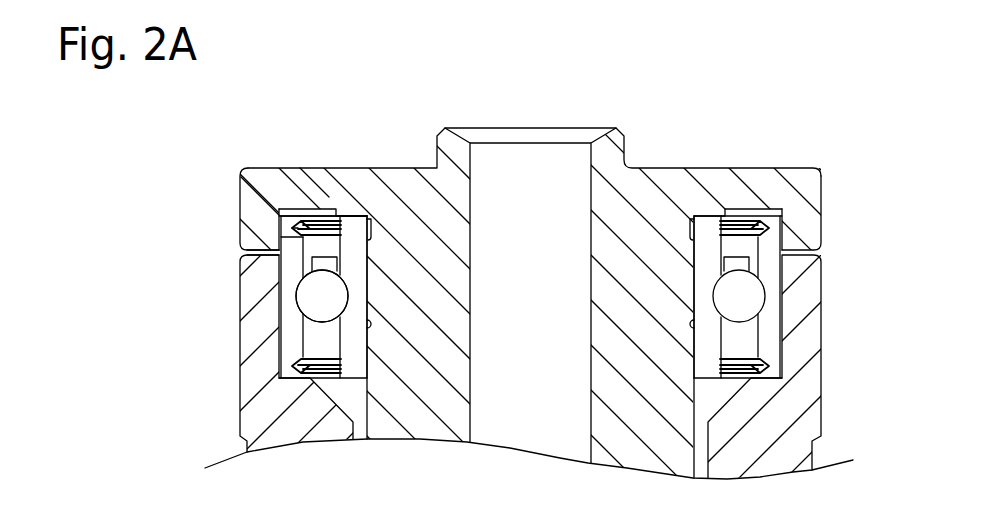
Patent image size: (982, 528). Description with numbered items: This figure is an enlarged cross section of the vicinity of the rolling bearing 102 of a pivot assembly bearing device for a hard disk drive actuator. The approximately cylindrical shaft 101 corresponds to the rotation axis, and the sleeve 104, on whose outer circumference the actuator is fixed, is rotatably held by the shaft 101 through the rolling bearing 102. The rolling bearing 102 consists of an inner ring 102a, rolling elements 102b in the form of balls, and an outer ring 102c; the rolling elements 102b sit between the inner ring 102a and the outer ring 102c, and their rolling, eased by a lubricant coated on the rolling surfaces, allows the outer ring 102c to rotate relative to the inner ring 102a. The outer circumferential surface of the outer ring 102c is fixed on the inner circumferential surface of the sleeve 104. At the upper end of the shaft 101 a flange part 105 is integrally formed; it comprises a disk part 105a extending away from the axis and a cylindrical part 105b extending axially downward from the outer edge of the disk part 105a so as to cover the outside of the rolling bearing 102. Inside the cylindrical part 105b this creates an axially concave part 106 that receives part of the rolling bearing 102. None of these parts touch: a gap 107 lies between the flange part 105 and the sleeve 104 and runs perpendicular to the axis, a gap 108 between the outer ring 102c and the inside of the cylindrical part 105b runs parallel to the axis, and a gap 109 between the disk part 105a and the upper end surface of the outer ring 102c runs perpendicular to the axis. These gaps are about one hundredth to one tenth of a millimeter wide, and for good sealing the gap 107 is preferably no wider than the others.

The shaft 101 is at (400, 183).
The rolling bearing 102 is at (265, 249).
The inner ring 102a is at (352, 245).
The rolling elements (ball) 102b is at (307, 295).
The outer ring 102c is at (293, 322).
The sleeve 104 is at (253, 425).
The flange part 105 is at (247, 172).
The disk part 105a is at (313, 190).
The cylindrical part 105b is at (257, 215).
The concave part 106 is at (323, 210).
The gap 107 is at (247, 252).
The gap 108 is at (272, 223).
The gap 109 is at (290, 210).